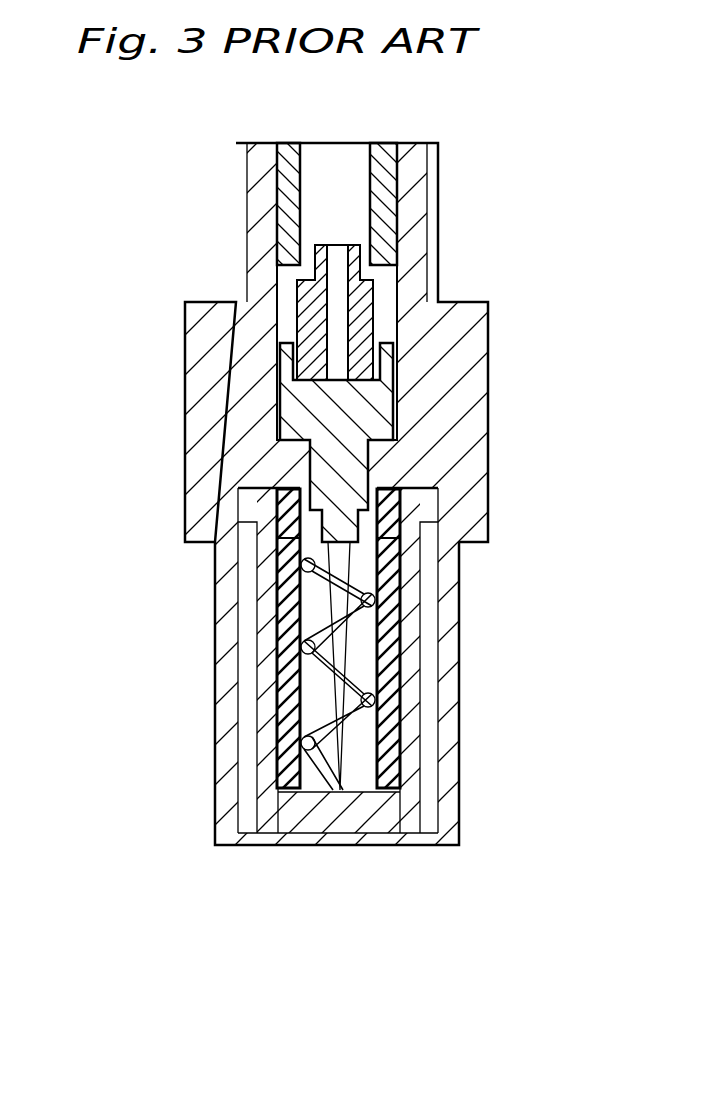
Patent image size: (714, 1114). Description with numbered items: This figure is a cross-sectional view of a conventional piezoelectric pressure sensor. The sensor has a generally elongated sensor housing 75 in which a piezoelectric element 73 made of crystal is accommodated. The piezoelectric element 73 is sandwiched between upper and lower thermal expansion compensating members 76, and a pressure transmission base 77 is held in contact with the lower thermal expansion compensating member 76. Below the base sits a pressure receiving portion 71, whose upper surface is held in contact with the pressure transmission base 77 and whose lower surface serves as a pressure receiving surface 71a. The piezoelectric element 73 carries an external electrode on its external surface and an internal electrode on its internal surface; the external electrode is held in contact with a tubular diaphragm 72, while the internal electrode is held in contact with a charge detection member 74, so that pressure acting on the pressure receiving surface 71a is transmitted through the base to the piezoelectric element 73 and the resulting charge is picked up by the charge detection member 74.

The pressure receiving portion 71 is at (388, 847).
The pressure receiving surface 71a is at (277, 847).
The tubular diaphragm 72 is at (420, 707).
The piezoelectric element 73 is at (400, 640).
The charge detection member 74 is at (337, 585).
The sensor housing 75 is at (488, 382).
The thermal expansion compensating members 76 is at (277, 767).
The pressure transmission base 77 is at (400, 817).